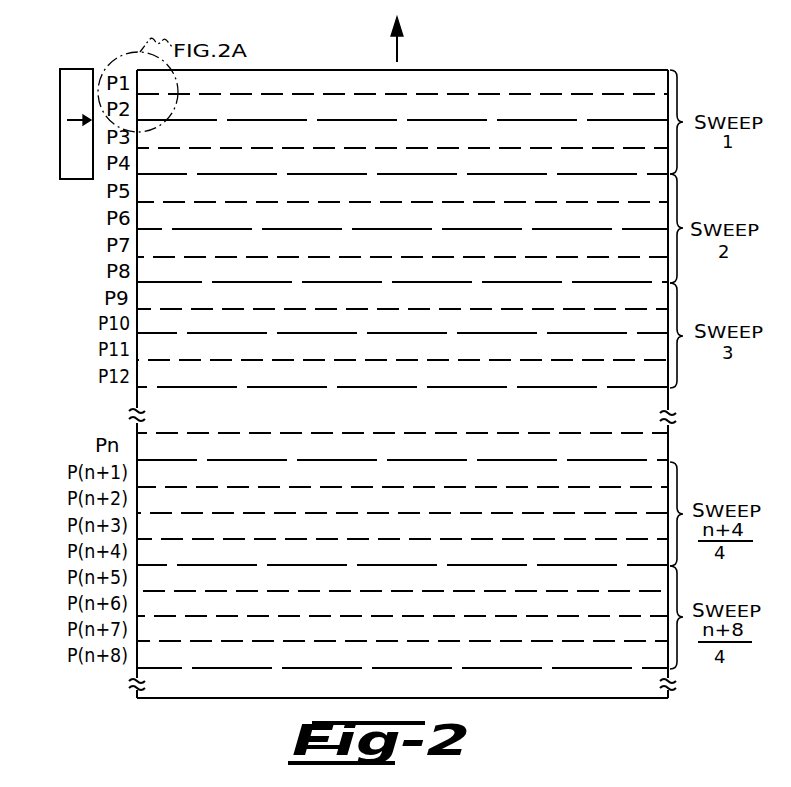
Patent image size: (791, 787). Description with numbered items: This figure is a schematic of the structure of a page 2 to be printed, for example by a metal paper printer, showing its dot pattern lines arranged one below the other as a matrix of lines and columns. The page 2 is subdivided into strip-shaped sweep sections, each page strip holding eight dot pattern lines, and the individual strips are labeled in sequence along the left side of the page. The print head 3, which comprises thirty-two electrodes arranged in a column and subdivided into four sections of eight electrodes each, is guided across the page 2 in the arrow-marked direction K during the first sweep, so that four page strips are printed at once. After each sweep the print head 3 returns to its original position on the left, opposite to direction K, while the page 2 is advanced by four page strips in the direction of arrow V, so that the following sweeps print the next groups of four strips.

The page 2 is at (200, 698).
The print head 3 is at (56, 118).
The arrow-marked direction K is at (79, 136).
The direction of arrow V is at (405, 39).